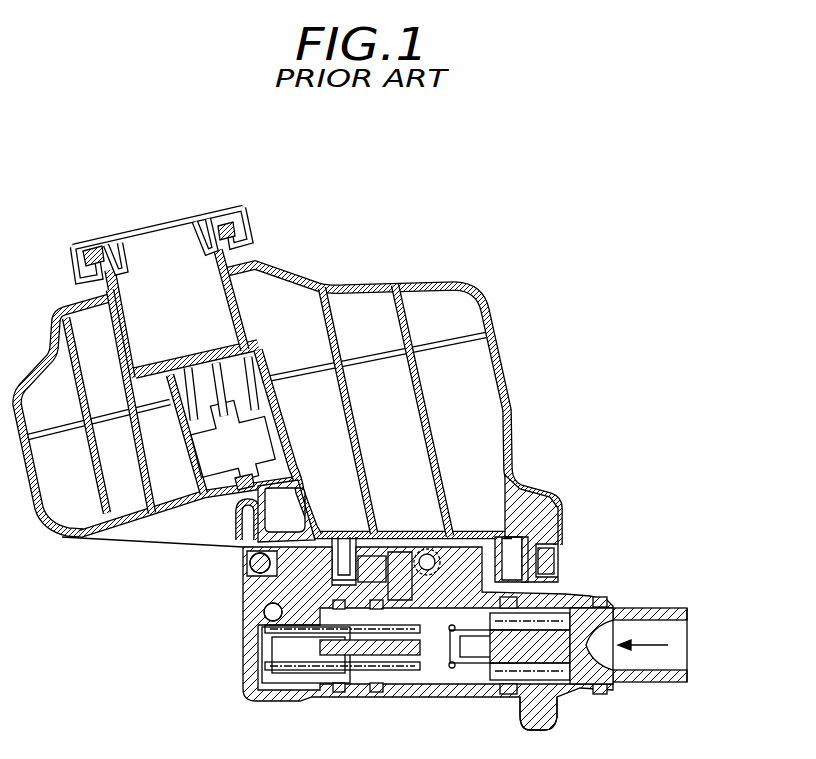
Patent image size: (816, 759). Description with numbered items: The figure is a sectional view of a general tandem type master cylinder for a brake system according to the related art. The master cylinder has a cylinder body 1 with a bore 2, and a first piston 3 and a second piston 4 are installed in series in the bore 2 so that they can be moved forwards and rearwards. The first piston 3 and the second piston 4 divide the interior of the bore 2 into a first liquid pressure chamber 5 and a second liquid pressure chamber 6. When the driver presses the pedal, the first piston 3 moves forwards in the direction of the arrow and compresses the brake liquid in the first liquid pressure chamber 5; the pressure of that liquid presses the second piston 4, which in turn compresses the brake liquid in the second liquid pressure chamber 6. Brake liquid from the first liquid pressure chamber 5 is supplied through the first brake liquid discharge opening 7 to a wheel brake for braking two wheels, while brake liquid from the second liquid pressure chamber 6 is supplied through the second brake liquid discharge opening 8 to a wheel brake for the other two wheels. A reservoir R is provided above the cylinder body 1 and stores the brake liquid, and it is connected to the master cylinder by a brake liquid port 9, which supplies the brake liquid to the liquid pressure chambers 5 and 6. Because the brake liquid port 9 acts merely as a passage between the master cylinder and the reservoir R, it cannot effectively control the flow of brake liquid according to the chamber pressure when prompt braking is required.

The reservoir R is at (508, 397).
The cylinder body 1 is at (588, 594).
The bore 2 is at (264, 613).
The first piston 3 is at (573, 692).
The second piston 4 is at (427, 684).
The first liquid pressure chamber 5 is at (463, 678).
The second liquid pressure chamber 6 is at (278, 681).
The first brake liquid discharge opening 7 is at (396, 597).
The second brake liquid discharge opening 8 is at (268, 605).
The brake liquid port 9 is at (352, 598).